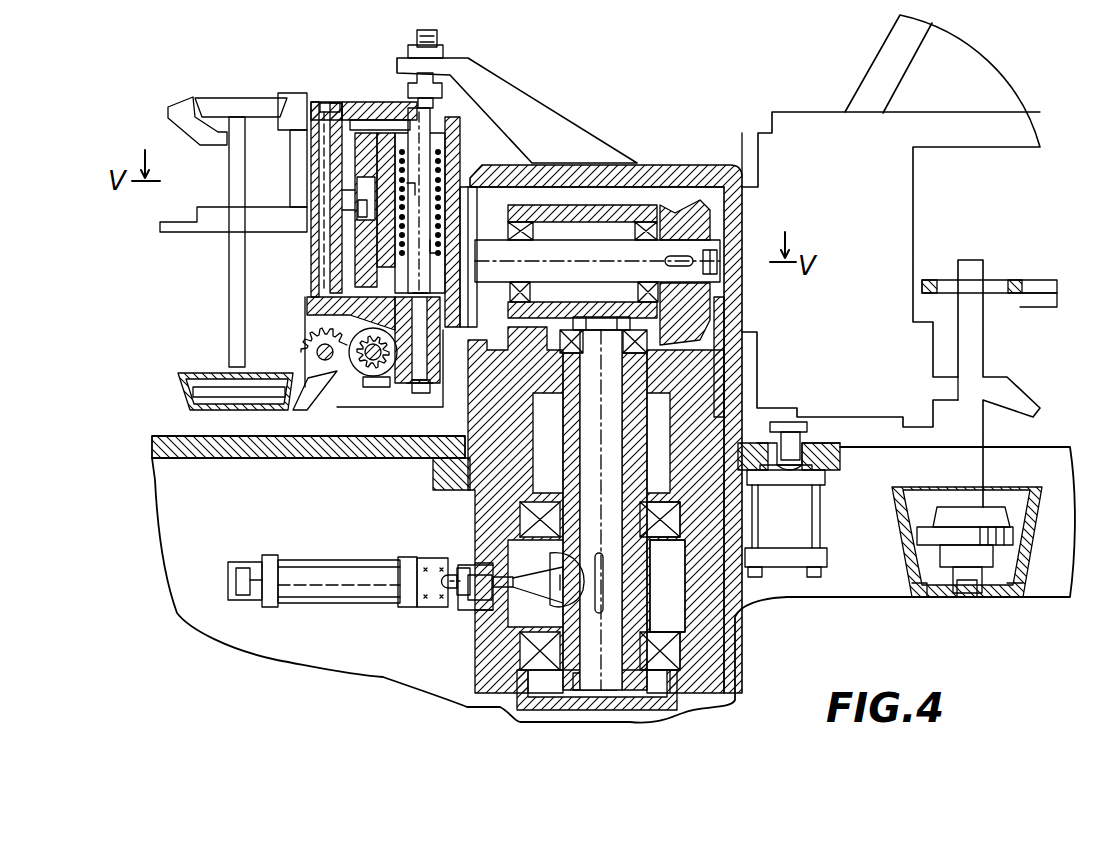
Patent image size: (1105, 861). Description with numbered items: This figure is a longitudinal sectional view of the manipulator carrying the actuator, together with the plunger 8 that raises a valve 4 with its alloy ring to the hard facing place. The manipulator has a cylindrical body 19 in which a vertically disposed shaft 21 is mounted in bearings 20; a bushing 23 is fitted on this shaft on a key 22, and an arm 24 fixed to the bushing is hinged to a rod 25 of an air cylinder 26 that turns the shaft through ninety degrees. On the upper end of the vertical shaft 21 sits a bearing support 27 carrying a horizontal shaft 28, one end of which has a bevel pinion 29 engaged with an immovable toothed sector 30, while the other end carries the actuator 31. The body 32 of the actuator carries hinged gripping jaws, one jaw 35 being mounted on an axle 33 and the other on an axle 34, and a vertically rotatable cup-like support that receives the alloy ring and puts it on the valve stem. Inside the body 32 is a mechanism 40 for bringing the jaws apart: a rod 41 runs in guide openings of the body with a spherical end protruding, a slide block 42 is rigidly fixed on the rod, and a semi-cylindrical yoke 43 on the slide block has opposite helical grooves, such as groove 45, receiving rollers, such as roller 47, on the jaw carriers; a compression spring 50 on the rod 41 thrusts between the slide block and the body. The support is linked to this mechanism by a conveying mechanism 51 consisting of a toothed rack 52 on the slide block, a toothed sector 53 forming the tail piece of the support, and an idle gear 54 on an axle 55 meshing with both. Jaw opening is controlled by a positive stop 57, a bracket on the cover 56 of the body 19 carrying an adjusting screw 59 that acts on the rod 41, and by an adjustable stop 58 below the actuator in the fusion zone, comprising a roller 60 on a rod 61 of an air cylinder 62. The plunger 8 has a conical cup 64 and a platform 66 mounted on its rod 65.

The valve 4 is at (975, 357).
The plunger 8 is at (1025, 608).
The cylindrical body 19 is at (700, 605).
The bearings 20 is at (670, 655).
The vertically disposed shaft 21 is at (585, 445).
The key 22 is at (603, 578).
The bushing 23 is at (640, 605).
The arm 24 is at (530, 610).
The rod 25 is at (449, 573).
The air cylinder 26 is at (362, 620).
The bearing support 27 is at (650, 218).
The horizontal shaft 28 is at (590, 240).
The bevel pinion 29 is at (688, 215).
The immovable toothed sector 30 is at (700, 332).
The actuator 31 is at (437, 200).
The body 32 is at (470, 216).
The axle 33 is at (330, 242).
The axle 34 is at (312, 353).
The gripping jaw 35 is at (207, 236).
The mechanism for bringing apart the gripping jaws 40 is at (352, 257).
The rod 41 is at (443, 118).
The slide block 42 is at (382, 110).
The semi-cylindrical yoke 43 is at (356, 108).
The helical groove 45 is at (363, 193).
The roller 47 is at (350, 205).
The compression spring 50 is at (398, 110).
The conveying mechanism 51 is at (362, 385).
The toothed rack 52 is at (405, 375).
The toothed sector 53 is at (312, 348).
The idle gear 54 is at (371, 378).
The axle 55 is at (386, 380).
The cover 56 is at (726, 177).
The positive stop 57 is at (488, 80).
The adjustable stop 58 is at (832, 537).
The adjusting screw 59 is at (437, 38).
The roller 60 is at (786, 428).
The rod 61 is at (800, 435).
The air cylinder 62 is at (805, 507).
The conical cup 64 is at (1040, 512).
The rod 65 is at (963, 593).
The platform 66 is at (1013, 537).